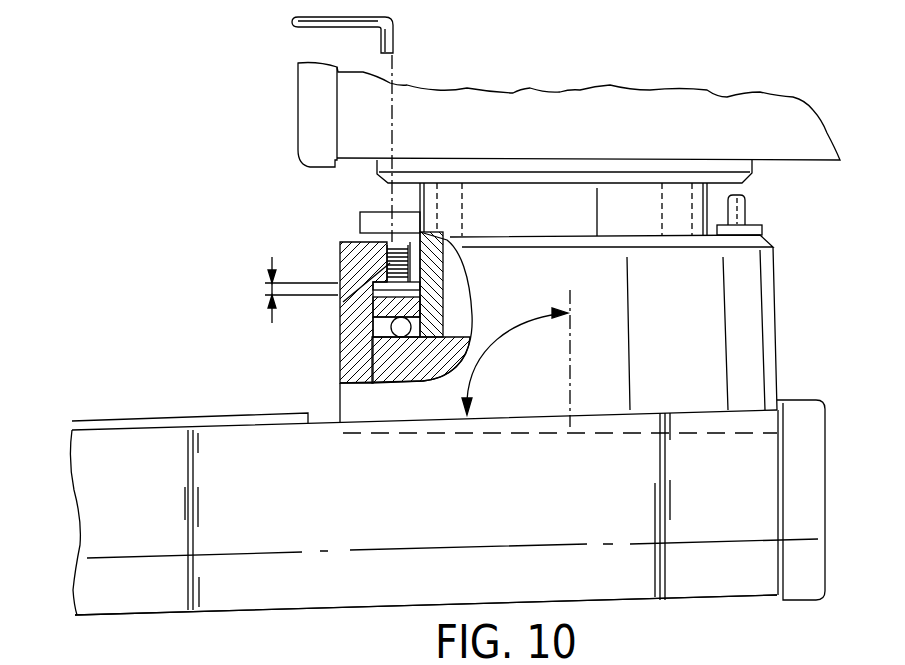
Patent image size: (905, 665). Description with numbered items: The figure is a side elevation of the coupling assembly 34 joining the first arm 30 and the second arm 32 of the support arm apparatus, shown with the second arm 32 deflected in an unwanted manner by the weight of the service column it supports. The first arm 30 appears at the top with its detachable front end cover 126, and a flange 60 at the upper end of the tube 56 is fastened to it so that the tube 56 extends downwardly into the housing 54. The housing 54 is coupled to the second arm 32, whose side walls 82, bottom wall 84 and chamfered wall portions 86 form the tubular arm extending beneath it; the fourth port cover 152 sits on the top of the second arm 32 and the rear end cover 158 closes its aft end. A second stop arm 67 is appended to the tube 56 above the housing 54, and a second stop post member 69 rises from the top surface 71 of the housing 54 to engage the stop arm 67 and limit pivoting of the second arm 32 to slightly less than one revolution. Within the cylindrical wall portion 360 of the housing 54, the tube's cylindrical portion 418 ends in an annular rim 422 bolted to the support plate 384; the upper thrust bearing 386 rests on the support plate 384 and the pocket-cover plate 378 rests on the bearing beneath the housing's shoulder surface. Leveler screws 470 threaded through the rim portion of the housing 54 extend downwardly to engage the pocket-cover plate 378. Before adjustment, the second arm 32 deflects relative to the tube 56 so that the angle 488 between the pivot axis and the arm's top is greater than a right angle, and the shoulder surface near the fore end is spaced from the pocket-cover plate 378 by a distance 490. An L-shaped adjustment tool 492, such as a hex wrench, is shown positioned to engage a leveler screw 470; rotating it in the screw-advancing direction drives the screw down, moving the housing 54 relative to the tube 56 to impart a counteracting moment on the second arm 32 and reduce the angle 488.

The first arm 30 is at (718, 78).
The second arm 32 is at (113, 402).
The coupling assembly 34 is at (190, 215).
The housing 54 is at (732, 320).
The tube 56 is at (510, 207).
The flange 60 is at (618, 167).
The second stop arm 67 is at (373, 218).
The second stop post member 69 is at (740, 212).
The top surface 71 is at (636, 237).
The side walls 82 is at (98, 453).
The bottom wall 84 is at (140, 614).
The chamfered wall portions 86 is at (92, 576).
The front end cover 126 is at (317, 107).
The fourth port cover 152 is at (198, 425).
The rear end cover 158 is at (803, 586).
The cylindrical wall portion 360 is at (357, 300).
The pocket-cover plate 378 is at (430, 295).
The support plate 384 is at (390, 358).
The upper thrust bearing 386 is at (390, 325).
The cylindrical portion 418 is at (430, 265).
The annular rim 422 is at (452, 335).
The leveler screws 470 is at (395, 268).
The angle 488 is at (497, 350).
The distance 490 is at (270, 259).
The adjustment tool 492 is at (395, 29).